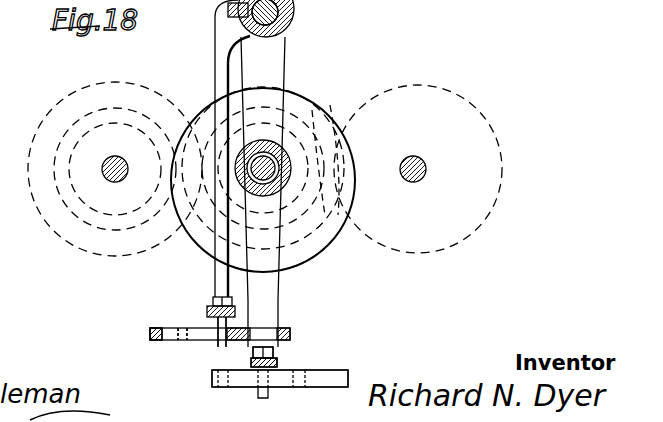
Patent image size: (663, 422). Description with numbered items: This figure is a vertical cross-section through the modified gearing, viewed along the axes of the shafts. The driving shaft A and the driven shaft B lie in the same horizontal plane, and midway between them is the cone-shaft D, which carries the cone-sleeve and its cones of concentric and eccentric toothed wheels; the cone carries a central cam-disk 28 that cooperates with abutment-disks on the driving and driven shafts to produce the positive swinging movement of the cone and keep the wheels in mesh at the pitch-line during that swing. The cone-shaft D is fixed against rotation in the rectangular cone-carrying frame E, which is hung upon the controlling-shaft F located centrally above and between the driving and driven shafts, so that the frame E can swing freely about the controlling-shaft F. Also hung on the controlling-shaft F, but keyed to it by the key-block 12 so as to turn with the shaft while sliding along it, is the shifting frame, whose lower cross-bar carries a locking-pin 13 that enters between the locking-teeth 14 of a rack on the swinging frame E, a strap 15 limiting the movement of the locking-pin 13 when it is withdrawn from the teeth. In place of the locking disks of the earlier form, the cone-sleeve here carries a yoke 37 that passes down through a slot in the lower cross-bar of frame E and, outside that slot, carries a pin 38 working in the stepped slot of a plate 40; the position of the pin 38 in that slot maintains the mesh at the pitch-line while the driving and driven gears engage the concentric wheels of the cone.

The key-block 12 is at (230, 8).
The controlling-shaft F is at (296, 8).
The swinging cone-frame E is at (272, 62).
The driving shaft A is at (115, 169).
The driven shaft B is at (418, 169).
The cone-shaft D is at (245, 198).
The central cam-disk 28 is at (321, 247).
The strap 15 is at (128, 323).
The locking-teeth 14 is at (187, 331).
The locking-pin 13 is at (218, 342).
The yoke 37 is at (277, 362).
The plate 40 is at (286, 370).
The pin 38 is at (270, 395).